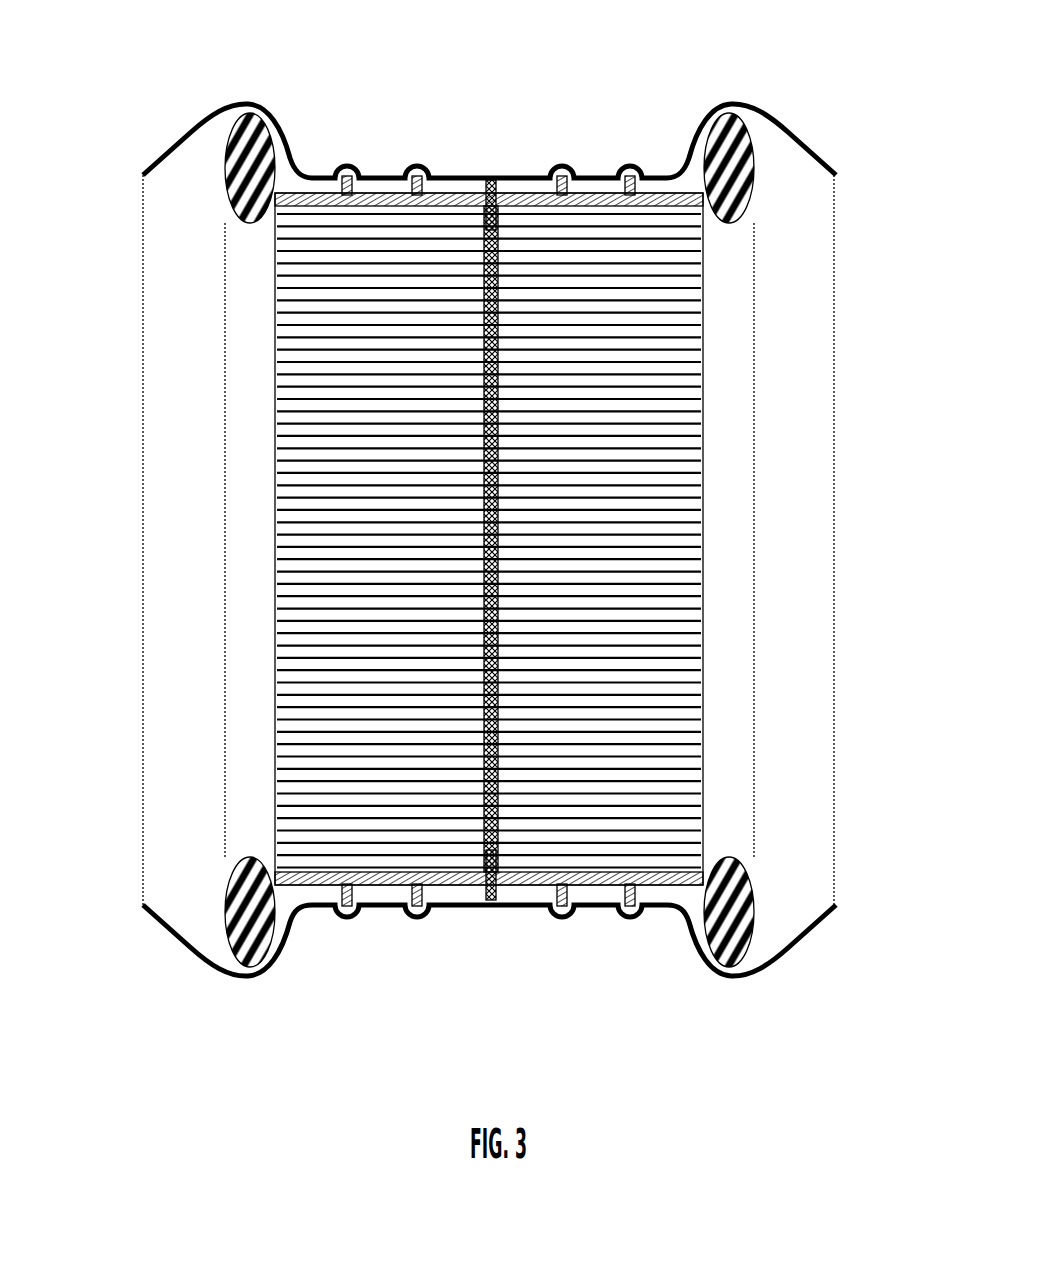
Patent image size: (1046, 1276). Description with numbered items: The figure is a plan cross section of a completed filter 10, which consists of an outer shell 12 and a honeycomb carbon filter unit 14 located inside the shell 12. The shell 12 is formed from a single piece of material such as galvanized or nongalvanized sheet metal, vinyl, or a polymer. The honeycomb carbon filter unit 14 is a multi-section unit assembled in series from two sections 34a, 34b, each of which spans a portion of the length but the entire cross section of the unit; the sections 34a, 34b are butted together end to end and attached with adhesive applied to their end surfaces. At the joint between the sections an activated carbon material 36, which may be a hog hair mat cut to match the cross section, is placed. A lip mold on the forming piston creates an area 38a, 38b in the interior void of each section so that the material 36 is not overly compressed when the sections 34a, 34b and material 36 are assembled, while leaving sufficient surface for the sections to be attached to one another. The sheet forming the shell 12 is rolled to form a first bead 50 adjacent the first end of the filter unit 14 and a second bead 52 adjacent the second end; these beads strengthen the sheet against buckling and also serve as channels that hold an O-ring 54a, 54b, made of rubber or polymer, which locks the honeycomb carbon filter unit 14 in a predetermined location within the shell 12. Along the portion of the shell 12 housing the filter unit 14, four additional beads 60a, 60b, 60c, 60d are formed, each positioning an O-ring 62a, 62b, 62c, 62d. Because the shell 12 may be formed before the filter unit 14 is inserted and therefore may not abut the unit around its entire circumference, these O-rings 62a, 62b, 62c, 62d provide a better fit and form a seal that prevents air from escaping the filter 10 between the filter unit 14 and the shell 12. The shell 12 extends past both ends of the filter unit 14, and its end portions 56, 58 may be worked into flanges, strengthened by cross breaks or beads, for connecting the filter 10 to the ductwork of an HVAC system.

The filter 10 is at (503, 555).
The outer shell 12 is at (302, 175).
The honeycomb carbon filter unit 14 is at (676, 697).
The section 34a is at (312, 948).
The section 34b is at (605, 948).
The activated carbon material 36 is at (491, 205).
The area 38a is at (488, 874).
The area 38b is at (489, 215).
The first bead 50 is at (214, 121).
The second bead 52 is at (770, 122).
The O-ring 54a is at (238, 497).
The O-ring 54b is at (738, 417).
The end portion 56 is at (165, 612).
The end portion 58 is at (834, 577).
The bead 60a is at (347, 168).
The bead 60b is at (418, 168).
The bead 60c is at (563, 168).
The bead 60d is at (632, 168).
The O-ring 62a is at (348, 908).
The O-ring 62b is at (420, 908).
The O-ring 62c is at (561, 908).
The O-ring 62d is at (635, 908).